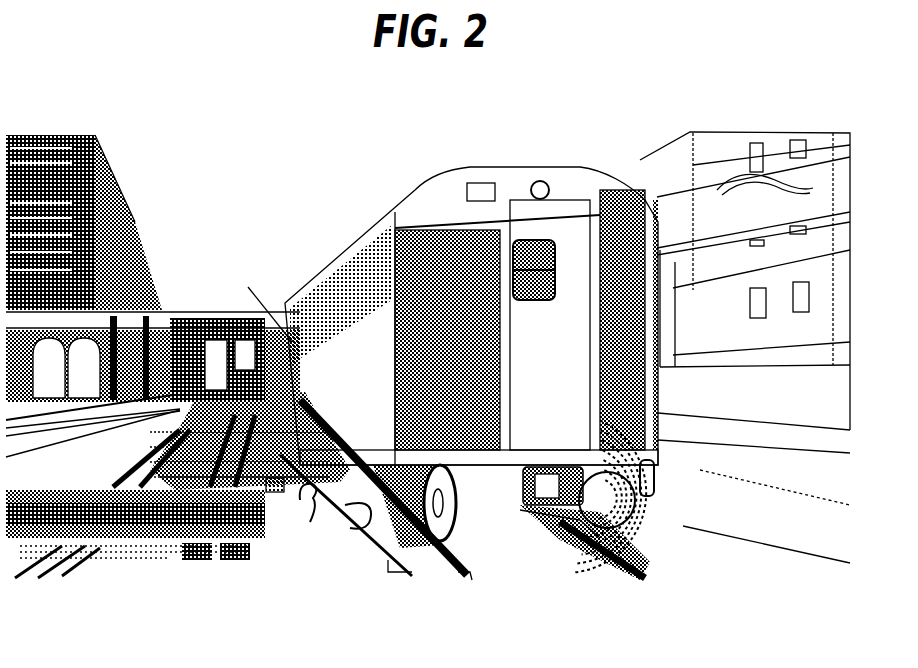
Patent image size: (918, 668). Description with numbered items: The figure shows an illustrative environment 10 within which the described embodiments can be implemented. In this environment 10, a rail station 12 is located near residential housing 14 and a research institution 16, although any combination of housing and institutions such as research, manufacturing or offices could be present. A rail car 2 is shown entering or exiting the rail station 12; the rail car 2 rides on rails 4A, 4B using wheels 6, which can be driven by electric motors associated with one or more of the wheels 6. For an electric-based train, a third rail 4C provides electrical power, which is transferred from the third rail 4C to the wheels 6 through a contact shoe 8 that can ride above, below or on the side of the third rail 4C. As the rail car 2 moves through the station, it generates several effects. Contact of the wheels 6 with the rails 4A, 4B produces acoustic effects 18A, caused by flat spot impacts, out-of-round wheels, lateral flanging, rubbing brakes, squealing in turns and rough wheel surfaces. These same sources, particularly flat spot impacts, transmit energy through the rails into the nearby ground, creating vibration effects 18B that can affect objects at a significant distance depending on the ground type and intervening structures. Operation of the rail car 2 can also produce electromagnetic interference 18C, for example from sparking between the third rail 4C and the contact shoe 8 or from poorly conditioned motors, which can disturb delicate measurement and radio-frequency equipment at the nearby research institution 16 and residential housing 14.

The environment 10 is at (70, 90).
The rail station 12 is at (290, 246).
The research institution 16 is at (75, 193).
The residential housing 14 is at (732, 326).
The rail car 2 is at (544, 389).
The acoustic effects 18A is at (683, 510).
The vibration effects 18B is at (140, 538).
The electromagnetic interference 18C is at (310, 522).
The contact shoe 8 is at (372, 528).
The rail 4A is at (660, 570).
The rail 4B is at (473, 578).
The third rail 4C is at (417, 574).
The wheels 6 is at (580, 538).